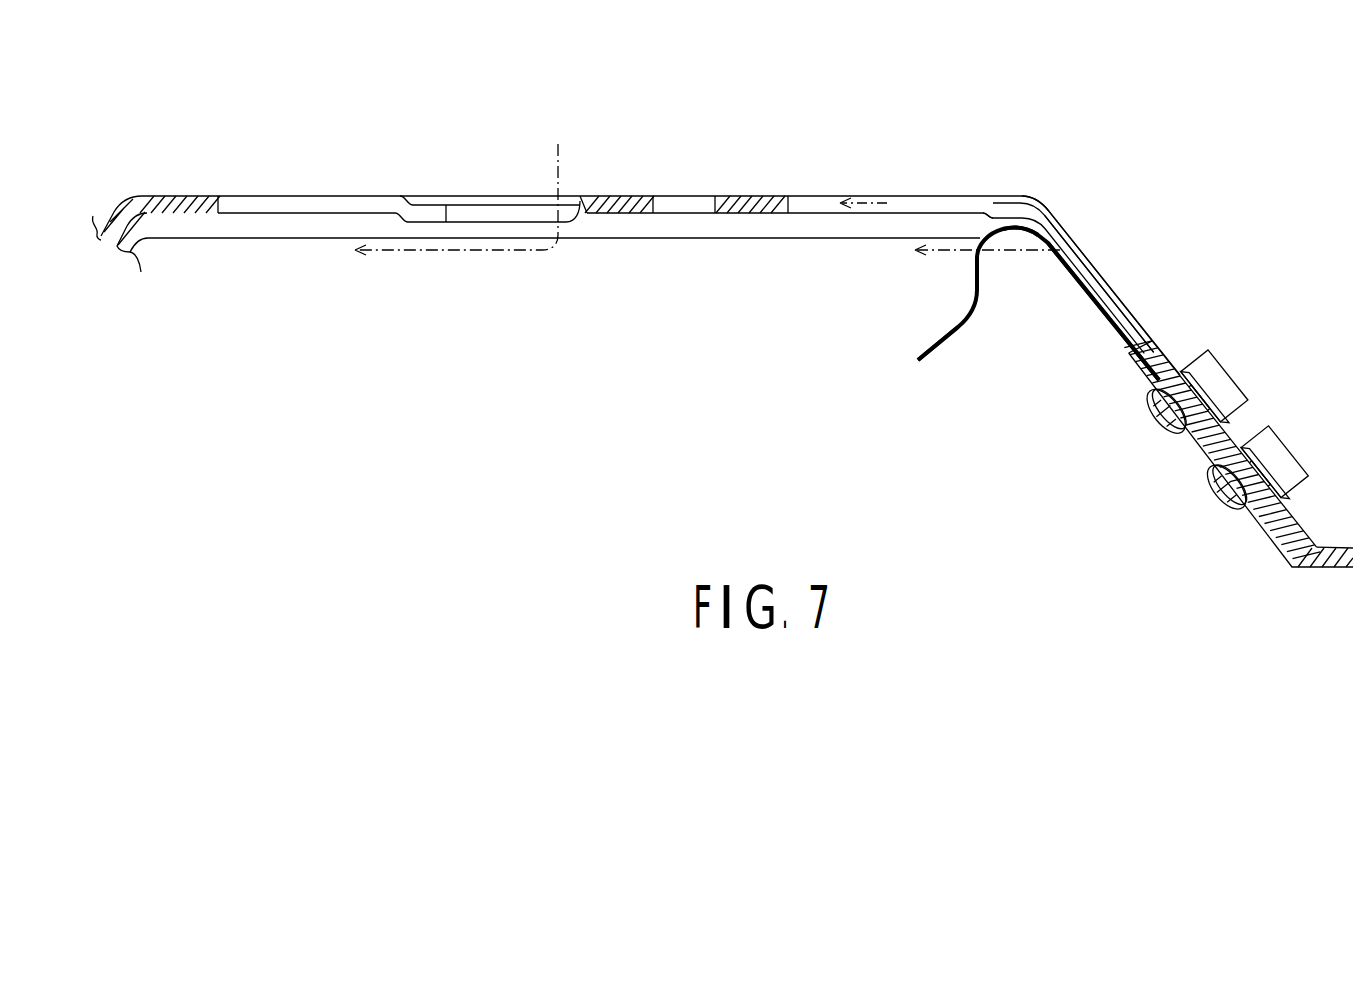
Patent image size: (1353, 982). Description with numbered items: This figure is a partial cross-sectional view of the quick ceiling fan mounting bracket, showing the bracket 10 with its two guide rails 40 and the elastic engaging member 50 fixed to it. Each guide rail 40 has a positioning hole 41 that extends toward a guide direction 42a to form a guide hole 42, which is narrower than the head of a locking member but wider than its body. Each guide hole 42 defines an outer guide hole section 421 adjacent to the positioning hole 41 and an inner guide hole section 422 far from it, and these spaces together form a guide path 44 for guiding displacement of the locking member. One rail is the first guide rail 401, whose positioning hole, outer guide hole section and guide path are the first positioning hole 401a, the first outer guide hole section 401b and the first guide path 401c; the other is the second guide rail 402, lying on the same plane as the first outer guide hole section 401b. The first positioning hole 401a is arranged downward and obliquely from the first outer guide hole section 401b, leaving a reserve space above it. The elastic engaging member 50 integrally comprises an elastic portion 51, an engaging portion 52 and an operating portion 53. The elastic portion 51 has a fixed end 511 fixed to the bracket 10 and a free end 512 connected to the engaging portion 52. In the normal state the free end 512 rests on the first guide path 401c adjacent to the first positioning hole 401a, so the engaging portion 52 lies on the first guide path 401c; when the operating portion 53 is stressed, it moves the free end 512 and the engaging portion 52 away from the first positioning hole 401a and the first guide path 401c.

The bracket 10 is at (1190, 337).
The guide rail 40 is at (434, 180).
The first guide rail 401 is at (932, 198).
The first positioning hole 401a is at (1125, 308).
The first outer guide hole section 401b is at (970, 198).
The first guide path 401c is at (1080, 228).
The second guide rail 402 is at (380, 196).
The positioning hole 41 is at (505, 210).
The guide hole 42 is at (290, 196).
The guide direction 42a is at (865, 198).
The outer guide hole section 421 is at (347, 196).
The inner guide hole section 422 is at (228, 196).
The guide path 44 is at (707, 182).
The elastic engaging member 50 is at (950, 284).
The elastic portion 51 is at (1117, 328).
The fixed end 511 is at (1157, 375).
The free end 512 is at (1080, 270).
The engaging portion 52 is at (1000, 223).
The operating portion 53 is at (937, 348).